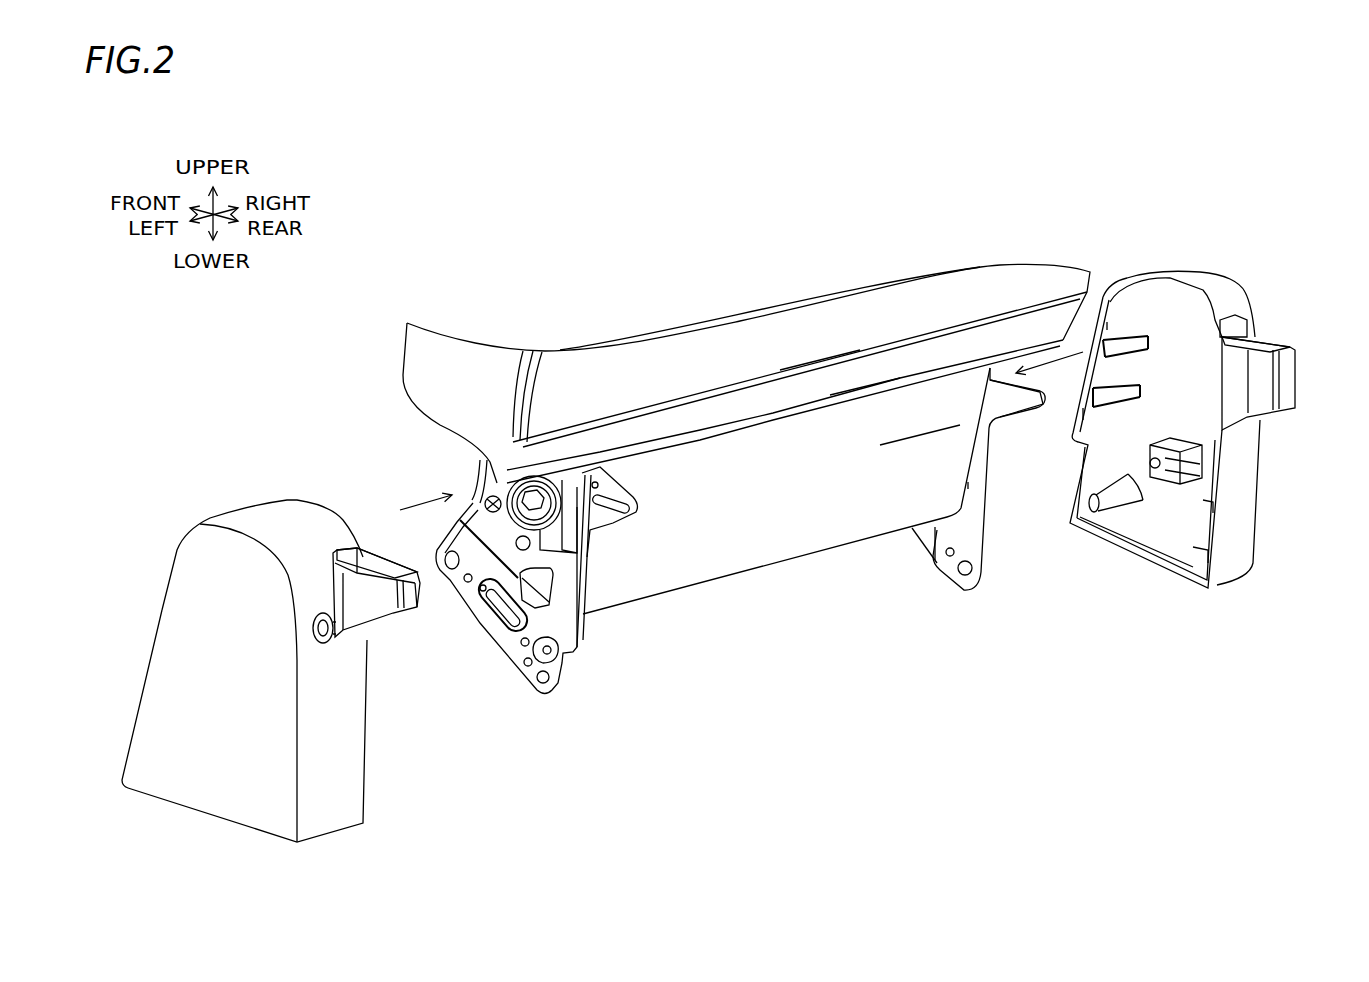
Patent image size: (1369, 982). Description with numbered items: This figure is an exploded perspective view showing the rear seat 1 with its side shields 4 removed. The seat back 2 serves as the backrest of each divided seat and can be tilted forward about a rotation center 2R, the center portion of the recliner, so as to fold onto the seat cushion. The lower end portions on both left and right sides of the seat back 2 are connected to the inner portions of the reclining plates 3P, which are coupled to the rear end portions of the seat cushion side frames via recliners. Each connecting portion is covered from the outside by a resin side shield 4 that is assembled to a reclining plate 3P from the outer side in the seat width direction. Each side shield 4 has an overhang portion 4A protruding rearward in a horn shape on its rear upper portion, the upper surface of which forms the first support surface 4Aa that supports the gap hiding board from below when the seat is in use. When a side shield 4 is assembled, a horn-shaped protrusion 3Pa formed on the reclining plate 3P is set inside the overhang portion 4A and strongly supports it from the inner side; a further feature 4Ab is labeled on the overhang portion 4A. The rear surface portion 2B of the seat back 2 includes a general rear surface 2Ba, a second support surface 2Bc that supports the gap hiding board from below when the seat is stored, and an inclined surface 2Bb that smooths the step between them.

The rear seat 1 is at (1062, 209).
The seat back 2 is at (401, 338).
The rear surface portion 2B is at (638, 362).
The general rear surface 2Ba is at (793, 338).
The inclined surface 2Bb is at (843, 373).
The second support surface 2Bc is at (908, 432).
The rotation center 2R is at (488, 490).
The reclining plate 3P is at (562, 603).
The protrusion 3Pa is at (617, 523).
The side shield 4 is at (194, 582).
The overhang portion 4A is at (370, 605).
The first support surface 4Aa is at (390, 573).
The side wall of engagement member 4Ab is at (418, 587).